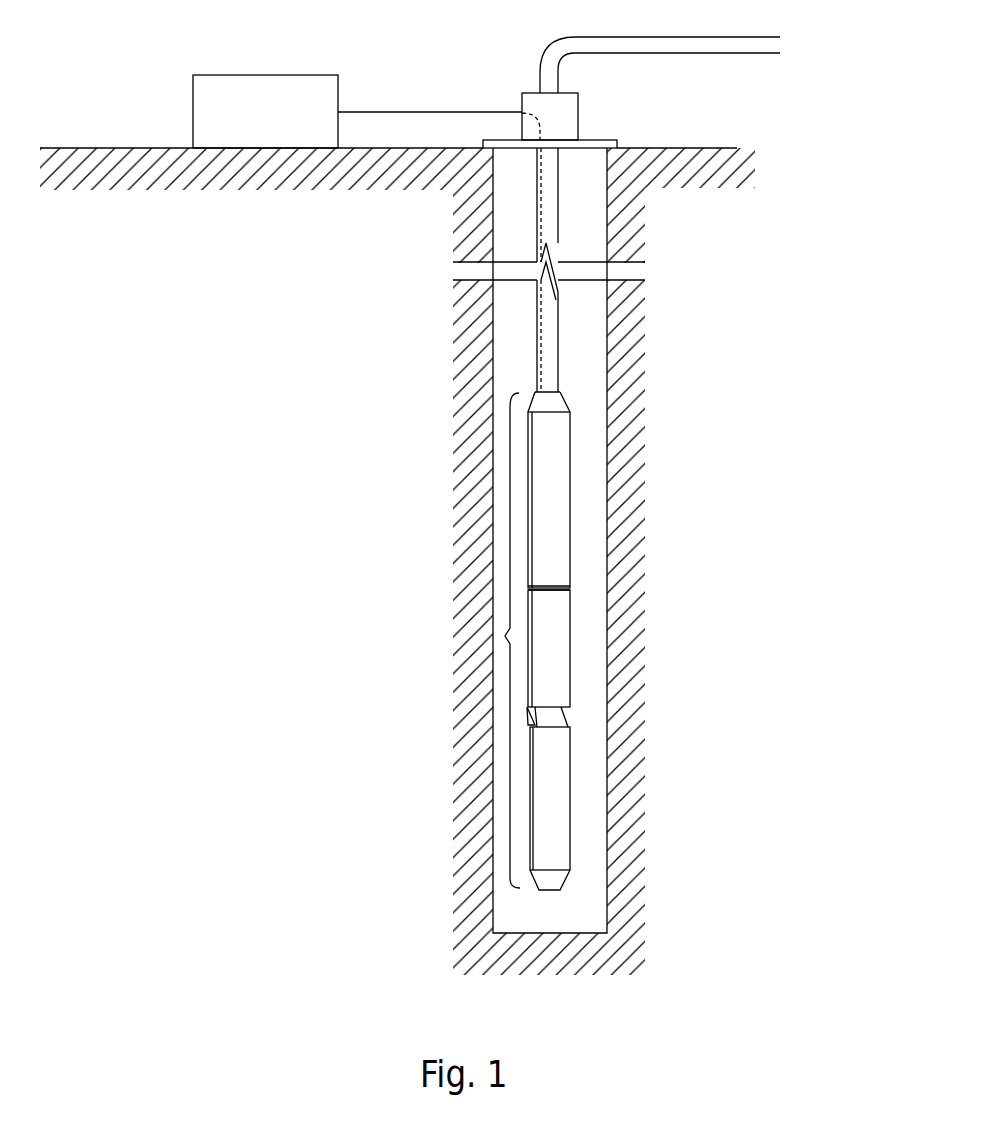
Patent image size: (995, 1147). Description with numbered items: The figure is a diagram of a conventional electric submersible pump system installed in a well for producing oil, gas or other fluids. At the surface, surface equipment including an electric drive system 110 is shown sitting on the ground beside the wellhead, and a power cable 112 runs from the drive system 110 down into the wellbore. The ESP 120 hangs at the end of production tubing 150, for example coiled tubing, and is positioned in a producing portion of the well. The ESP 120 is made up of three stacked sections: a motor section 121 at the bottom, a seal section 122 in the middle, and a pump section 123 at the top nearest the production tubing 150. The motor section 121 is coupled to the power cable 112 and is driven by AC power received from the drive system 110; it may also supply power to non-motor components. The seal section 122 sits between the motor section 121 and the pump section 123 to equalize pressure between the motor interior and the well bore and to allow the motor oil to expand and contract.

The electric drive system 110 is at (267, 74).
The power cable 112 is at (428, 110).
The ESP 120 is at (505, 640).
The motor section 121 is at (651, 818).
The seal section 122 is at (651, 646).
The pump section 123 is at (650, 493).
The production tubing 150 is at (580, 332).